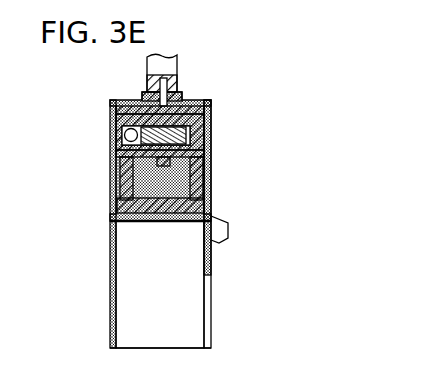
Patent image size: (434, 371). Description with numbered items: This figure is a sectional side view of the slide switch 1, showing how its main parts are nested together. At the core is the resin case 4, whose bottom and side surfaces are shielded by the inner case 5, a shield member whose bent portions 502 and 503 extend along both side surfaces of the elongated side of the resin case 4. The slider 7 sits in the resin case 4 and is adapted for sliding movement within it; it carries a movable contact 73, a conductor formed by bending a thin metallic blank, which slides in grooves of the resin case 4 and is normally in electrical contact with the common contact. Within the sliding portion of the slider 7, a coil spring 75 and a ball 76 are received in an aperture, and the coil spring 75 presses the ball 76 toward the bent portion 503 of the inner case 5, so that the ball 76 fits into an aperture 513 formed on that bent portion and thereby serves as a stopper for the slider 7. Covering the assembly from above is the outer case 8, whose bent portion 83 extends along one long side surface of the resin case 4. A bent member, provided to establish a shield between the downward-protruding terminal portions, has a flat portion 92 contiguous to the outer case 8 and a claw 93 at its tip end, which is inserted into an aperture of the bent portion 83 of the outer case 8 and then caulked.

The slide switch 1 is at (110, 70).
The resin case 4 is at (116, 207).
The inner case 5 is at (134, 225).
The slider 7 is at (185, 71).
The outer case 8 is at (200, 100).
The movable contact 73 is at (178, 164).
The coil spring 75 is at (190, 136).
The ball 76 is at (126, 139).
The bent portion 83 is at (210, 292).
The flat portion 92 is at (113, 282).
The claw 93 is at (220, 226).
The bent portion 502 is at (208, 108).
The bent portion 503 is at (116, 116).
The aperture 513 is at (112, 125).